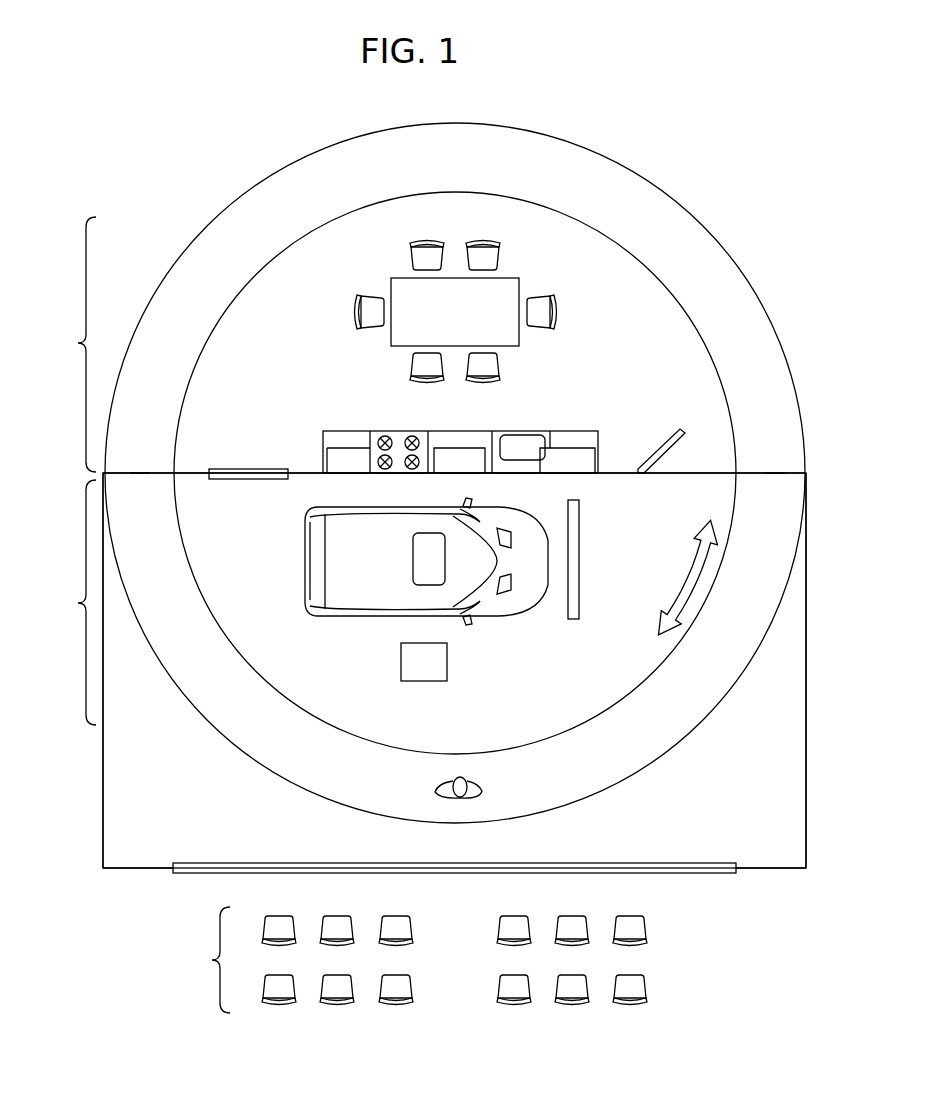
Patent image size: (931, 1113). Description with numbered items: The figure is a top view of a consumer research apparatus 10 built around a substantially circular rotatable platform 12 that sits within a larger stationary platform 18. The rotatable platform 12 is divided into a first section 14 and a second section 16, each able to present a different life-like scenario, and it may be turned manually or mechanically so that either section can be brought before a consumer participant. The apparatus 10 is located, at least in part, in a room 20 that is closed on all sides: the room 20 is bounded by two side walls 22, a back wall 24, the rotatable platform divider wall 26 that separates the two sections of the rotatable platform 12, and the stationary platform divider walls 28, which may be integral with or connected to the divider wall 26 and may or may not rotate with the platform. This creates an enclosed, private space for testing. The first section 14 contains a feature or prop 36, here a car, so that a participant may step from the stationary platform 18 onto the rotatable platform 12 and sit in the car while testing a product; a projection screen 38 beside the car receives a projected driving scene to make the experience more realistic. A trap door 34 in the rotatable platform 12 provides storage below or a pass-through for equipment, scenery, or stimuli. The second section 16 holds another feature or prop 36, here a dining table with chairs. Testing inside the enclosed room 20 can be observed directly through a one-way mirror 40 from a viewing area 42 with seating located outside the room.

The consumer research apparatus 10 is at (662, 132).
The rotatable platform 12 is at (618, 243).
The first section 14 is at (73, 602).
The second section 16 is at (73, 344).
The stationary platform 18 is at (720, 280).
The room 20 is at (148, 826).
The side walls 22 is at (103, 780).
The back wall 24 is at (768, 869).
The rotatable platform divider wall 26 is at (198, 473).
The stationary platform divider walls 28 is at (140, 473).
The trap door 34 is at (435, 662).
The feature or prop 36 is at (398, 336).
The projection screen 38 is at (579, 574).
The one-way mirror 40 is at (692, 874).
The viewing area 42 is at (415, 960).